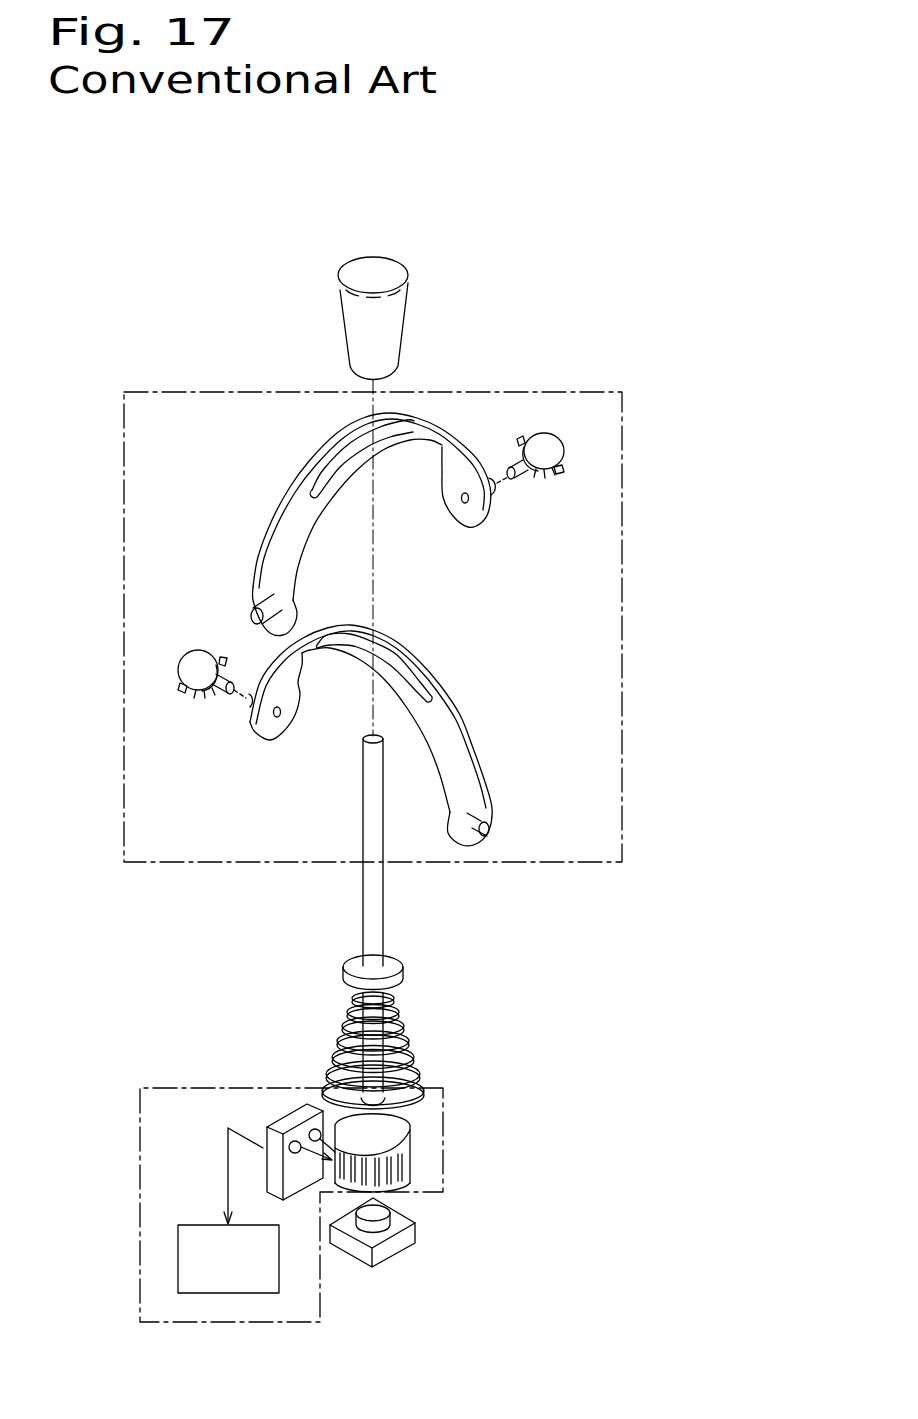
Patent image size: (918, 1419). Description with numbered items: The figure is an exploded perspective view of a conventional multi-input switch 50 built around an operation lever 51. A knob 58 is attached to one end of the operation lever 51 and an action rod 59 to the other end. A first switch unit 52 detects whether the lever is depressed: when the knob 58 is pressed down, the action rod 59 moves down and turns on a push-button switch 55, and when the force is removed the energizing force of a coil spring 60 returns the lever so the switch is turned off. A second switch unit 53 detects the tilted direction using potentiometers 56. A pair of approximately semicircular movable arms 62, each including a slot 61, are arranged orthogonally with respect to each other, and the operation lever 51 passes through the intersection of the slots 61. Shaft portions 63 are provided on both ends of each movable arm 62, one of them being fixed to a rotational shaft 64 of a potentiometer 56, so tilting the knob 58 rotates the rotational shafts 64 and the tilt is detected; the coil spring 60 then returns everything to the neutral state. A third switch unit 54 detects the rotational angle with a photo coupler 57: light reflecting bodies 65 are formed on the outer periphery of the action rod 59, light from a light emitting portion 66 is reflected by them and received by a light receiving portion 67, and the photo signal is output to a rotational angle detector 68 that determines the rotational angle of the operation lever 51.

The multi-input switch 50 is at (612, 300).
The operation lever 51 is at (386, 908).
The first switch unit 52 is at (400, 1241).
The second switch unit 53 is at (572, 864).
The third switch unit 54 is at (325, 1288).
The push-button switch 55 is at (390, 1212).
The potentiometer 56 is at (558, 446).
The photo coupler 57 is at (267, 1135).
The knob 58 is at (396, 318).
The action rod 59 is at (415, 1130).
The coil spring 60 is at (410, 1038).
The slot 61 is at (318, 478).
The movable arm 62 is at (326, 458).
The shaft portion 63 is at (252, 612).
The rotational shaft 64 is at (518, 478).
The light reflecting body 65 is at (398, 1182).
The light emitting portion 66 is at (315, 1129).
The light receiving portion 67 is at (293, 1141).
The rotational angle detector 68 is at (205, 1235).